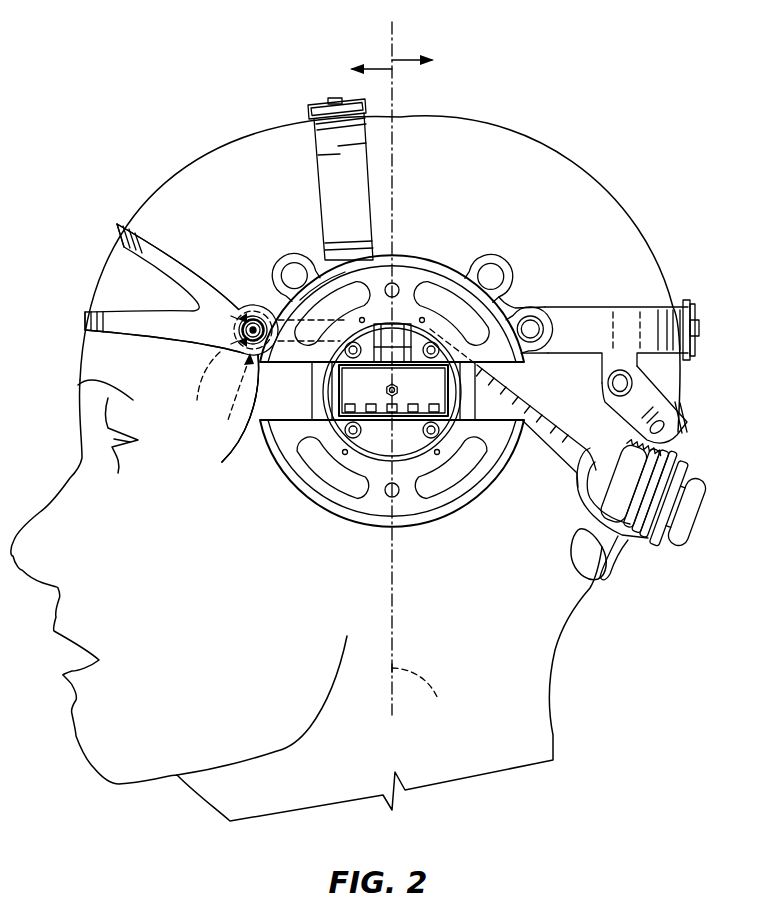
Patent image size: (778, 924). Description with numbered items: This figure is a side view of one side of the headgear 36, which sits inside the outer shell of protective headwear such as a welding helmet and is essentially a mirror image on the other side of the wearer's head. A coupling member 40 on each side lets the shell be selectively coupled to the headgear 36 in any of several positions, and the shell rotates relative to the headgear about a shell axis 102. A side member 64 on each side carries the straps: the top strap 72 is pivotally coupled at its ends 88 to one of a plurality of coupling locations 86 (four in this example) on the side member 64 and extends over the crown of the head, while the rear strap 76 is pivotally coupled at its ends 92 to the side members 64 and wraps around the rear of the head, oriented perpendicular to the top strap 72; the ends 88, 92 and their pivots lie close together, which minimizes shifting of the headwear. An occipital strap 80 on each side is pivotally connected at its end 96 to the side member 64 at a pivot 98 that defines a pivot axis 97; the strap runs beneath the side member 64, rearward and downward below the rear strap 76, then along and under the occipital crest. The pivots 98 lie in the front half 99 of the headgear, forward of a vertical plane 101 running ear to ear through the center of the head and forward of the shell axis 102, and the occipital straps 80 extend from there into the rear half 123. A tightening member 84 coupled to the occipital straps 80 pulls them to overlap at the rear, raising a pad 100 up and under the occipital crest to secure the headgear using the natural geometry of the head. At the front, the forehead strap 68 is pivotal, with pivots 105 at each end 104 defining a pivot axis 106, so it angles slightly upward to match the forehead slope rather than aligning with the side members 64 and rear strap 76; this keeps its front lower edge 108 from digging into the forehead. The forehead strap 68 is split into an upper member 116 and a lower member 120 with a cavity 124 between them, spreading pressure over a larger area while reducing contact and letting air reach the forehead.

The headgear 36 is at (629, 299).
The coupling member 40 is at (322, 516).
The side member 64 is at (513, 268).
The forehead strap 68 is at (115, 226).
The top strap 72 is at (368, 137).
The rear strap 76 is at (703, 306).
The occipital strap 80 is at (551, 464).
The tightening member 84 is at (677, 555).
The coupling location 86 is at (284, 262).
The end of top strap 88 is at (321, 262).
The end of rear strap 92 is at (547, 360).
The end of occipital strap 96 is at (230, 398).
The pivot axis 97 is at (210, 419).
The pivot 98 is at (201, 381).
The front half 99 is at (380, 67).
The pad 100 is at (588, 587).
The vertical plane 101 is at (430, 692).
The shell axis 102 is at (387, 393).
The end of forehead strap 104 is at (252, 302).
The pivot of forehead strap 105 is at (240, 316).
The pivot axis of forehead strap 106 is at (210, 419).
The front lower edge 108 is at (84, 333).
The upper member 116 is at (118, 232).
The lower member 120 is at (158, 324).
The rear half 123 is at (406, 58).
The cavity 124 is at (113, 308).